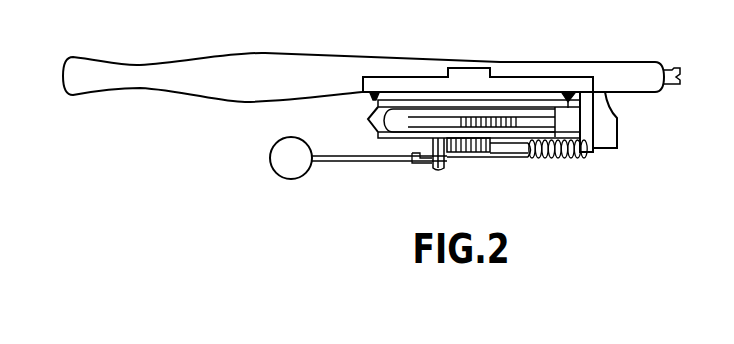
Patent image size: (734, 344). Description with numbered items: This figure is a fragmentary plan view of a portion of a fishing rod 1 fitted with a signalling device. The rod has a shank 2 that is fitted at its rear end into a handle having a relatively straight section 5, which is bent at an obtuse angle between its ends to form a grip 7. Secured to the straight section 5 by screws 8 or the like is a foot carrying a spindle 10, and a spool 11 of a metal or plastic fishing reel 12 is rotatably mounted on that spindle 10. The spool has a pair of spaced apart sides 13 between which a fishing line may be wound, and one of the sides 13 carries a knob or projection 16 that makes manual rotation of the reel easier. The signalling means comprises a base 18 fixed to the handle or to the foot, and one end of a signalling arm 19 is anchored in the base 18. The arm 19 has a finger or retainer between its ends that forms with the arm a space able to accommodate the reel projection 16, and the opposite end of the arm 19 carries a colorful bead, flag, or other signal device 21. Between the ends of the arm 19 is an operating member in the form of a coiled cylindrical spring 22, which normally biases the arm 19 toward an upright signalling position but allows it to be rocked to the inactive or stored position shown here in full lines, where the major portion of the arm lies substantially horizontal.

The fishing rod 1 is at (650, 55).
The shank 2 is at (673, 85).
The straight section 5 is at (545, 61).
The grip 7 is at (243, 97).
The screws 8 is at (367, 97).
The spindle 10 is at (462, 101).
The spool 11 is at (397, 140).
The fishing reel 12 is at (503, 165).
The sides 13 is at (377, 120).
The knob or projection 16 is at (435, 166).
The base 18 is at (608, 130).
The signalling arm 19 is at (476, 156).
The signal device 21 is at (272, 163).
The coiled cylindrical spring 22 is at (566, 158).